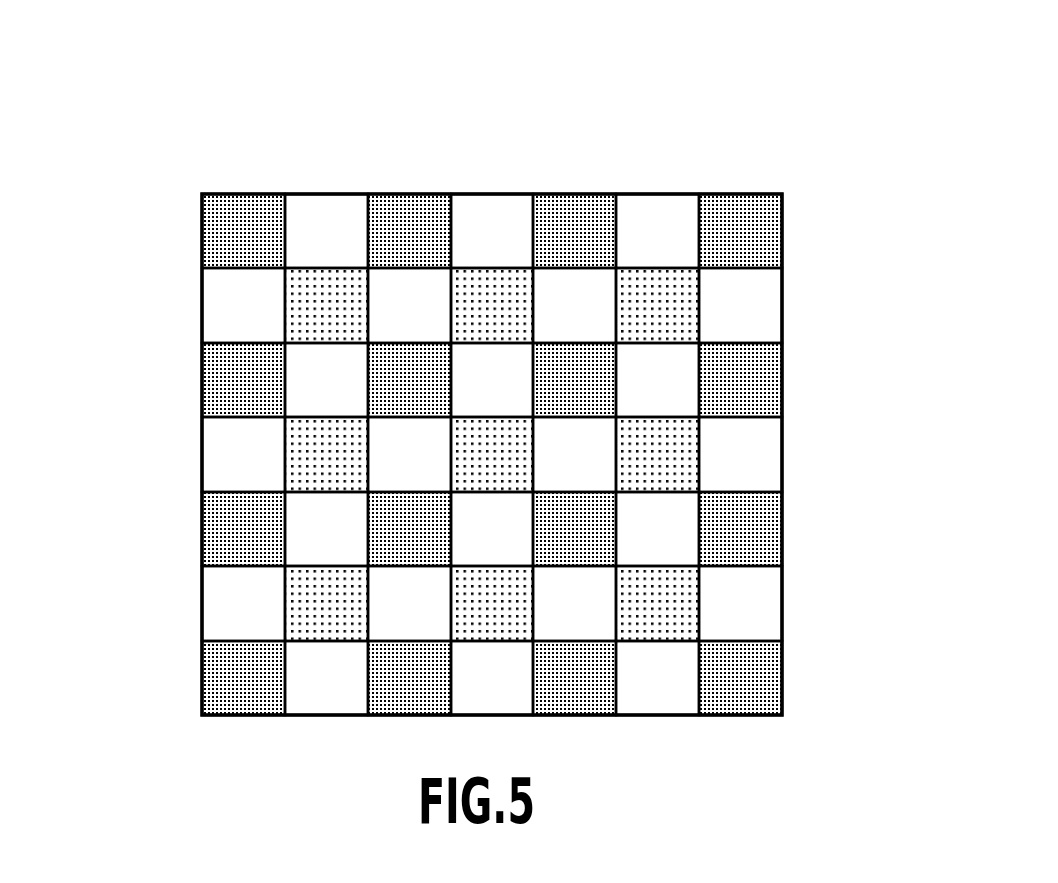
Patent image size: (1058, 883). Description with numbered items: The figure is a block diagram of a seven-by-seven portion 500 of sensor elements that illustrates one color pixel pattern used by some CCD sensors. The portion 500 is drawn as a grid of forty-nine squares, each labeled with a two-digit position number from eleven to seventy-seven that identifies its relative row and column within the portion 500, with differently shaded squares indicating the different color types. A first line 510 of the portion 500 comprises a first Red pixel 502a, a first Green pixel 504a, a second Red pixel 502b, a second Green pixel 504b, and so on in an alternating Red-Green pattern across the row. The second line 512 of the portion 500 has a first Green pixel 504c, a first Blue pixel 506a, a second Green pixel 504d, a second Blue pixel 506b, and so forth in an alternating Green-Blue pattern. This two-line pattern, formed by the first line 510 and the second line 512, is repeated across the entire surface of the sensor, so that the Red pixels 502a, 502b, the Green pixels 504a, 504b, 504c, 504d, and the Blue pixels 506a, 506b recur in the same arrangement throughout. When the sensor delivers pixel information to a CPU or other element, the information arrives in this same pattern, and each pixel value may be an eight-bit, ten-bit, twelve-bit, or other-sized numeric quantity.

The 7-by-7 portion 500 is at (469, 359).
The first Red pixel 502a is at (250, 205).
The second Red pixel 502b is at (435, 212).
The first Green pixel 504a is at (338, 205).
The second Green pixel 504b is at (513, 203).
The first Green pixel 504c is at (215, 298).
The second Green pixel 504d is at (383, 280).
The first Blue pixel 506a is at (297, 282).
The second Blue pixel 506b is at (475, 287).
The first line 510 is at (564, 180).
The second line 512 is at (469, 173).